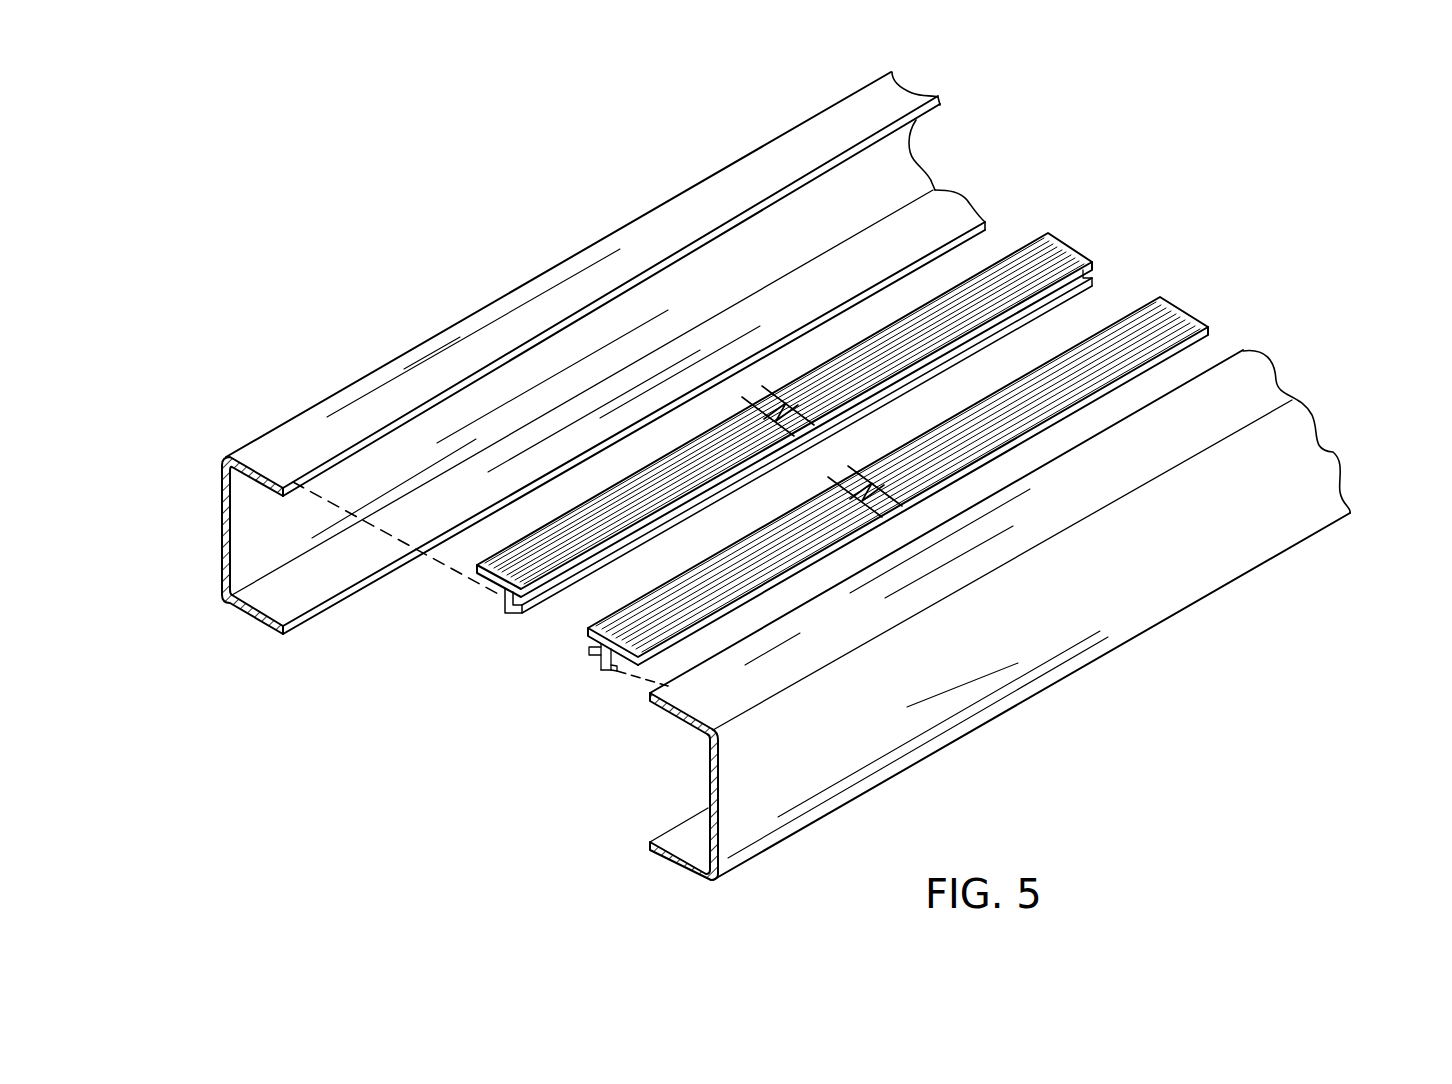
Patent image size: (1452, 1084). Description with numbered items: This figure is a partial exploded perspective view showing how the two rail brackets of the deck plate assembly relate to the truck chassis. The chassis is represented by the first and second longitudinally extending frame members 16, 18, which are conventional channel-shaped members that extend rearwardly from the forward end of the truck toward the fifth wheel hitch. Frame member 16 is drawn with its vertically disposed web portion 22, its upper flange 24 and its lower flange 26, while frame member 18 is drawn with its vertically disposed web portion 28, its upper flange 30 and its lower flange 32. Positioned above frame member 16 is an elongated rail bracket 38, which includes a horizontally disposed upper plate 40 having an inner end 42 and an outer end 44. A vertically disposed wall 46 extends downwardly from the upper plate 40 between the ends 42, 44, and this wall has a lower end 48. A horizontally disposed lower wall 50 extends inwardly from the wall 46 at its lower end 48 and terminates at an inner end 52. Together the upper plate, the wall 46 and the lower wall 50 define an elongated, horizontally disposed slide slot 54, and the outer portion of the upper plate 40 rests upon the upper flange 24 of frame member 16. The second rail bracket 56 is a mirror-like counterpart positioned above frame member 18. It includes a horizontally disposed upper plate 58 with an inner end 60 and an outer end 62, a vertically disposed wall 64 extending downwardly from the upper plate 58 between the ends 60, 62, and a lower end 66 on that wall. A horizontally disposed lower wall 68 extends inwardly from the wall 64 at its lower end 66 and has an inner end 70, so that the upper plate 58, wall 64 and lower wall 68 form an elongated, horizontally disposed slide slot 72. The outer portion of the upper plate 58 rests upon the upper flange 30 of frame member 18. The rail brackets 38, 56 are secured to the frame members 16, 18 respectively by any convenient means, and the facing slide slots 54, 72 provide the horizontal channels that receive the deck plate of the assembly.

The frame member 16 is at (579, 239).
The frame member 18 is at (1345, 403).
The web portion 22 is at (264, 526).
The upper flange 24 is at (445, 348).
The lower flange 26 is at (264, 600).
The web portion 28 is at (707, 772).
The upper flange 30 is at (1243, 380).
The lower flange 32 is at (683, 853).
The rail bracket 38 is at (811, 399).
The upper plate 40 is at (1053, 257).
The inner end 42 is at (1092, 267).
The outer end 44 is at (1000, 258).
The wall 46 is at (490, 591).
The lower end 48 is at (512, 611).
The lower wall 50 is at (1041, 307).
The inner end 52 is at (943, 368).
The slide slot 54 is at (1076, 288).
The rail bracket 56 is at (1043, 440).
The upper plate 58 is at (1122, 360).
The inner end 60 is at (597, 617).
The outer end 62 is at (792, 573).
The wall 64 is at (608, 668).
The lower end 66 is at (603, 665).
The lower wall 68 is at (600, 660).
The inner end 70 is at (590, 655).
The slide slot 72 is at (588, 652).